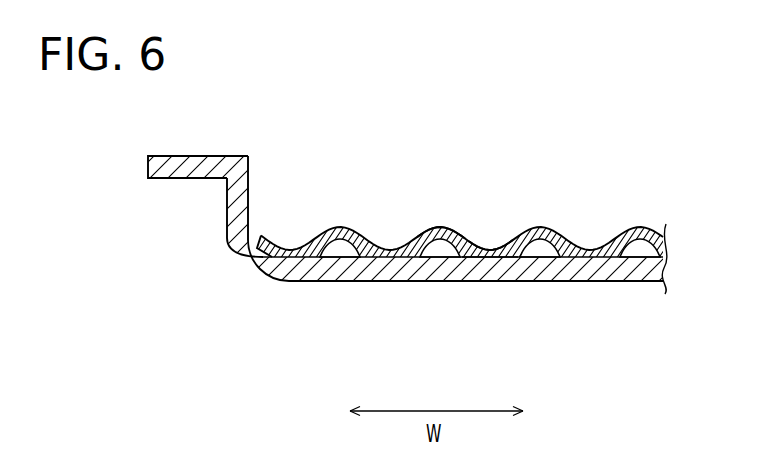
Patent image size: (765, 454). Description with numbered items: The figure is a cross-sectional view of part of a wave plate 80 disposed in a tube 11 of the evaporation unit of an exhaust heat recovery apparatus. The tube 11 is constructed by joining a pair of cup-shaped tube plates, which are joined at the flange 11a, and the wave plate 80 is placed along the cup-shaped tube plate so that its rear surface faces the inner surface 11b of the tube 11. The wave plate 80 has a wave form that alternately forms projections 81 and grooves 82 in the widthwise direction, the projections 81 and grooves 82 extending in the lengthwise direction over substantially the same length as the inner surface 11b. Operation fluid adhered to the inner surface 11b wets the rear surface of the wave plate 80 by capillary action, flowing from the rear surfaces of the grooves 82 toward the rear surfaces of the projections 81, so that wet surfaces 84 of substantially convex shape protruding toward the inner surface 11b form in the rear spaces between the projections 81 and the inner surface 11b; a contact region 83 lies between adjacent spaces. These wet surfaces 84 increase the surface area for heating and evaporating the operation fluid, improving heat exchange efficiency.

The tube 11 is at (590, 282).
The flange 11a is at (167, 156).
The inner surface 11b is at (540, 258).
The wave plate 80 is at (462, 245).
The projection 81 is at (442, 227).
The groove 82 is at (490, 248).
The contact portion 83 is at (514, 258).
The wet surface 84 is at (361, 254).